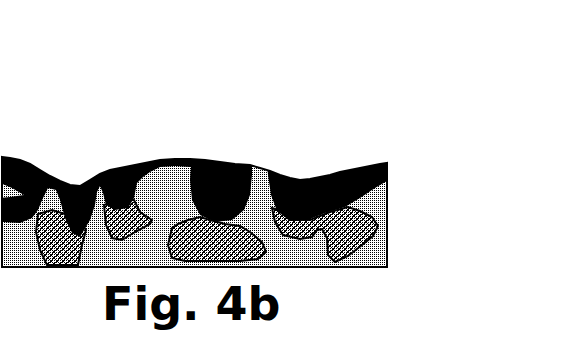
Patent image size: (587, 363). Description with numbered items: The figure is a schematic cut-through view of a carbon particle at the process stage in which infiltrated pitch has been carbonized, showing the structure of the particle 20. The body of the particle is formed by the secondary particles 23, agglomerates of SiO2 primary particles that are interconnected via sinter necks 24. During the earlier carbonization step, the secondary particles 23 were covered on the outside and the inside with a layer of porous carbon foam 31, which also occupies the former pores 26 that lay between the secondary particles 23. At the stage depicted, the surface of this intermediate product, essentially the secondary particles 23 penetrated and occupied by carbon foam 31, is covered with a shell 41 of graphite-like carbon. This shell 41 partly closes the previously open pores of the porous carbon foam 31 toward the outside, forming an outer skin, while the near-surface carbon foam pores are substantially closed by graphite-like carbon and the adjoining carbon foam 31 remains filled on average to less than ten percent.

The coating layer 20 is at (197, 215).
The secondary particles 23 is at (167, 198).
The sinter necks 24 is at (232, 157).
The pores 26 is at (80, 187).
The carbon foam 31 is at (340, 227).
The shell 41 is at (303, 177).